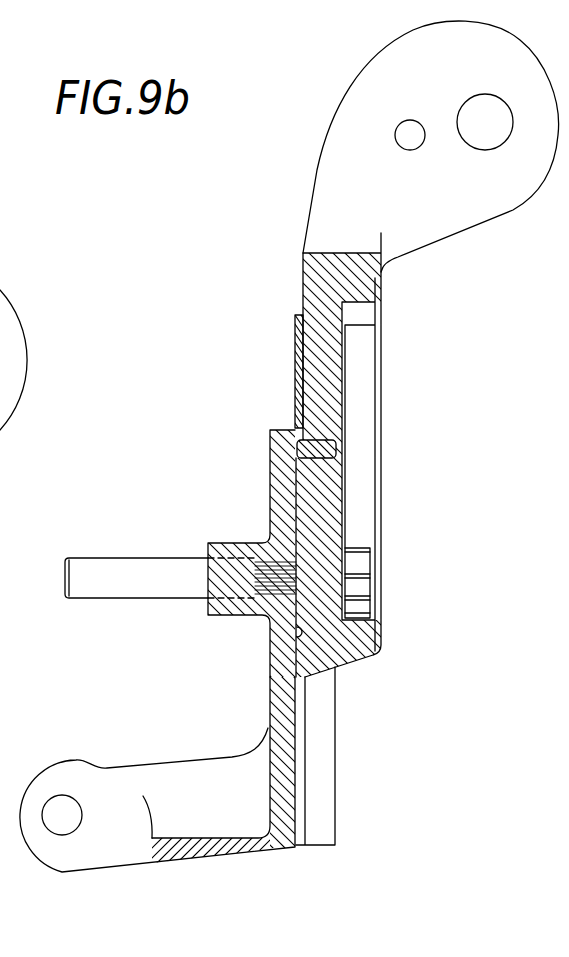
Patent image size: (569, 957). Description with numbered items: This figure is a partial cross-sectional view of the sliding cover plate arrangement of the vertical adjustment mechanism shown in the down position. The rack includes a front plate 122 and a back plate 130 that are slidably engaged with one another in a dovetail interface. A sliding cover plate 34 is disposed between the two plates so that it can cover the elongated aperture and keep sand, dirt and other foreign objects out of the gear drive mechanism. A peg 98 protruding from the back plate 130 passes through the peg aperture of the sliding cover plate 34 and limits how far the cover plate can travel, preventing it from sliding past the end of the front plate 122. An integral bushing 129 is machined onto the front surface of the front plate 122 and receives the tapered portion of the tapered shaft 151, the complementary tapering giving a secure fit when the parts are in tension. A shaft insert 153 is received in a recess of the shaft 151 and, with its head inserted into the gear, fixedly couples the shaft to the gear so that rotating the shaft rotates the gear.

The sliding cover plate 34 is at (296, 316).
The peg 98 is at (336, 450).
The front plate 122 is at (280, 800).
The integral bushing 129 is at (227, 542).
The back plate 130 is at (337, 280).
The tapered shaft 151 is at (124, 557).
The shaft insert 153 is at (373, 562).